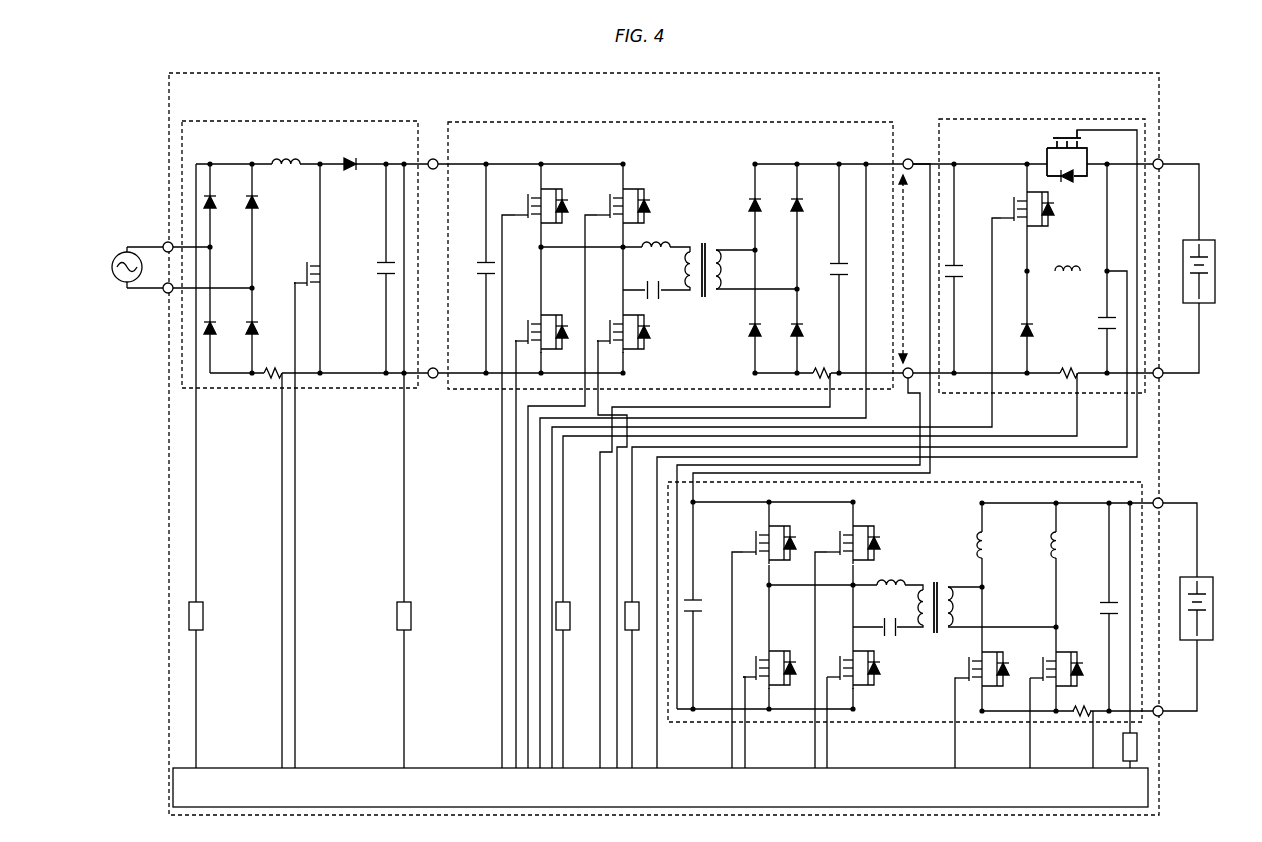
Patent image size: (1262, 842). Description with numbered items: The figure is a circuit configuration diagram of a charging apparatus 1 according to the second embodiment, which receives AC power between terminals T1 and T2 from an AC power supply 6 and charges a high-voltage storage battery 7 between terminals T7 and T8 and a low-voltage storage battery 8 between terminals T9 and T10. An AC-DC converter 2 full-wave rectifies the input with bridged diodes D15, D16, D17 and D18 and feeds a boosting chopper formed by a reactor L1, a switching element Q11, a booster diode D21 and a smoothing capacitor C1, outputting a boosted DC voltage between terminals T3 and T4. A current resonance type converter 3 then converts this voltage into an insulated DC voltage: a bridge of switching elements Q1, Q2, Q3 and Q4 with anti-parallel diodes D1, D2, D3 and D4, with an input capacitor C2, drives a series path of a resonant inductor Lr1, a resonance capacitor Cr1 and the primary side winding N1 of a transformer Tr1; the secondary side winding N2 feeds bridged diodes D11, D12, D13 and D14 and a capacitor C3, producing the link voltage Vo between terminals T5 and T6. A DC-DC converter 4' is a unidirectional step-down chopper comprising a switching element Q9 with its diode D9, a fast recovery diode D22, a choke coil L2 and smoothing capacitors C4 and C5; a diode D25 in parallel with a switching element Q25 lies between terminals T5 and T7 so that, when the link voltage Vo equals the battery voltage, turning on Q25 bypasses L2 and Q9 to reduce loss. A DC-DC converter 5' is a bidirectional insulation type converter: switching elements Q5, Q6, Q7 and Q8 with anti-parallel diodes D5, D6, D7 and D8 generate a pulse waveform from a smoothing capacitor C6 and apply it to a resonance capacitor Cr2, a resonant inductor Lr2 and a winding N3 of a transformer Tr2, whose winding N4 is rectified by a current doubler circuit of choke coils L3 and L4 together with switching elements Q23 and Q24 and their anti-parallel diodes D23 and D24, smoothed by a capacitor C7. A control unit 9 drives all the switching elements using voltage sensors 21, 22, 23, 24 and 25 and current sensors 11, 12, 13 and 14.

The charging apparatus 1 is at (169, 73).
The AC-DC converter 2 is at (202, 121).
The current resonance type converter 3 is at (458, 122).
The DC-DC converter 4' is at (1036, 238).
The DC-DC converter 5' is at (902, 619).
The AC power supply 6 is at (116, 261).
The storage battery 7 is at (1214, 241).
The storage battery 8 is at (1212, 577).
The control unit 9 is at (236, 769).
The current sensor 11 is at (280, 367).
The current sensor 12 is at (825, 365).
The current sensor 13 is at (1064, 383).
The current sensor 14 is at (1097, 700).
The voltage sensor 21 is at (219, 599).
The voltage sensor 22 is at (426, 599).
The voltage sensor 23 is at (585, 599).
The voltage sensor 24 is at (647, 599).
The voltage sensor 25 is at (1117, 747).
The terminal T1 is at (167, 244).
The terminal T2 is at (167, 292).
The terminal T3 is at (441, 160).
The terminal T4 is at (436, 379).
The terminal T5 is at (917, 160).
The terminal T6 is at (906, 382).
The terminal T7 is at (1163, 161).
The terminal T8 is at (1163, 381).
The terminal T9 is at (1163, 500).
The terminal T10 is at (1163, 719).
The link voltage Vo is at (915, 269).
The reactor L1 is at (267, 151).
The choke coil L2 is at (1074, 267).
The choke coil L3 is at (967, 549).
The choke coil L4 is at (1041, 549).
The resonant inductor Lr1 is at (664, 235).
The resonant inductor Lr2 is at (896, 577).
The resonance capacitor Cr1 is at (660, 300).
The resonance capacitor Cr2 is at (896, 640).
The smoothing capacitor C1 is at (375, 257).
The capacitor C2 is at (477, 253).
The capacitor C3 is at (829, 257).
The smoothing capacitor C4 is at (975, 253).
The smoothing capacitor C5 is at (1092, 322).
The smoothing capacitor C6 is at (717, 582).
The smoothing capacitor C7 is at (1099, 599).
The switching element Q1 is at (519, 203).
The switching element Q2 is at (523, 312).
The switching element Q3 is at (608, 203).
The switching element Q4 is at (608, 312).
The switching element Q5 is at (752, 548).
The switching element Q6 is at (752, 656).
The switching element Q7 is at (837, 548).
The switching element Q8 is at (836, 656).
The switching element Q9 is at (999, 213).
The switching element Q11 is at (307, 250).
The switching element Q23 is at (963, 671).
The switching element Q24 is at (1037, 671).
The switching element Q25 is at (1040, 147).
The anti-parallel diode D1 is at (577, 203).
The anti-parallel diode D2 is at (575, 312).
The anti-parallel diode D3 is at (652, 203).
The anti-parallel diode D4 is at (649, 349).
The anti-parallel diode D5 is at (805, 548).
The anti-parallel diode D6 is at (803, 656).
The anti-parallel diode D7 is at (880, 548).
The anti-parallel diode D8 is at (880, 686).
The diode D9 is at (1070, 212).
The diode D11 is at (747, 207).
The diode D12 is at (742, 337).
The diode D13 is at (789, 207).
The diode D14 is at (784, 337).
The diode D15 is at (233, 216).
The diode D16 is at (228, 336).
The diode D17 is at (273, 216).
The diode D18 is at (271, 332).
The diode D21 is at (352, 170).
The diode D22 is at (1040, 317).
The anti-parallel diode D23 is at (1002, 679).
The anti-parallel diode D24 is at (1074, 662).
The diode D25 is at (1068, 180).
The primary side winding N1 is at (687, 273).
The secondary side winding N2 is at (717, 264).
The winding N3 is at (920, 611).
The winding N4 is at (943, 602).
The transformer Tr1 is at (700, 291).
The transformer Tr2 is at (937, 577).